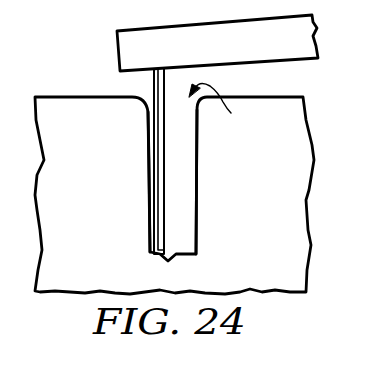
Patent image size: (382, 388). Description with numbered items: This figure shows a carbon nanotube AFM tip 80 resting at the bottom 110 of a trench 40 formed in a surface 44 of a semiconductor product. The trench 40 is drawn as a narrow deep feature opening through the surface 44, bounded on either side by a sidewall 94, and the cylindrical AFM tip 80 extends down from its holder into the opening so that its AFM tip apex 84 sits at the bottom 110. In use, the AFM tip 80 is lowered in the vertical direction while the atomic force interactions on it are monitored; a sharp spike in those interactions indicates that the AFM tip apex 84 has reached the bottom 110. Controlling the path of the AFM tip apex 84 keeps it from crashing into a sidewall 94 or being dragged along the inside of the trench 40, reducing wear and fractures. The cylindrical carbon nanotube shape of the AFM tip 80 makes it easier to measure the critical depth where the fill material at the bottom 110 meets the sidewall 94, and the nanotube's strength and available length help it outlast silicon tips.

The surface 44 is at (88, 97).
The deep trench 40 is at (223, 107).
The AFM tip 80 is at (151, 113).
The sidewall 94 is at (148, 124).
The AFM tip apex 84 is at (172, 251).
The bottom 110 is at (162, 257).